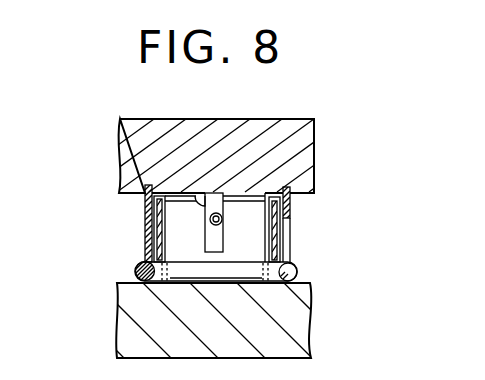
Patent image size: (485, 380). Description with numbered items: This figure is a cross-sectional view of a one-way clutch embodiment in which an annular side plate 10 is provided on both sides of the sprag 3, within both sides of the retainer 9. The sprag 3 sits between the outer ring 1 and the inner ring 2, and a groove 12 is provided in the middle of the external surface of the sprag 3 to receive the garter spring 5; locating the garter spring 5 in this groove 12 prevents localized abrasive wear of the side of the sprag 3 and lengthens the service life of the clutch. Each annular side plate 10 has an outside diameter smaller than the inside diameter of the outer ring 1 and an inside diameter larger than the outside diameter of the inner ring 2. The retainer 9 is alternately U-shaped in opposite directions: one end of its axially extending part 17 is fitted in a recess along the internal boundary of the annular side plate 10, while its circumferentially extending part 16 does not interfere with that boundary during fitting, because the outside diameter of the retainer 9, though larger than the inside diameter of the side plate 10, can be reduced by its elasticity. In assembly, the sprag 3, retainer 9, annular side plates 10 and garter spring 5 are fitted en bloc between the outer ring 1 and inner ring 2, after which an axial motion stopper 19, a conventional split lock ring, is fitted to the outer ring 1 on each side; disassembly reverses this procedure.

The outer ring 1 is at (302, 134).
The inner ring 2 is at (125, 315).
The sprag 3 is at (255, 245).
The garter spring 5 is at (194, 196).
The retainer 9 is at (300, 264).
The annular side plate 10 is at (153, 231).
The groove 12 is at (217, 193).
The circumferentially extending part 16 is at (136, 267).
The axially extending part 17 is at (178, 277).
The axial motion stopper 19 is at (144, 207).